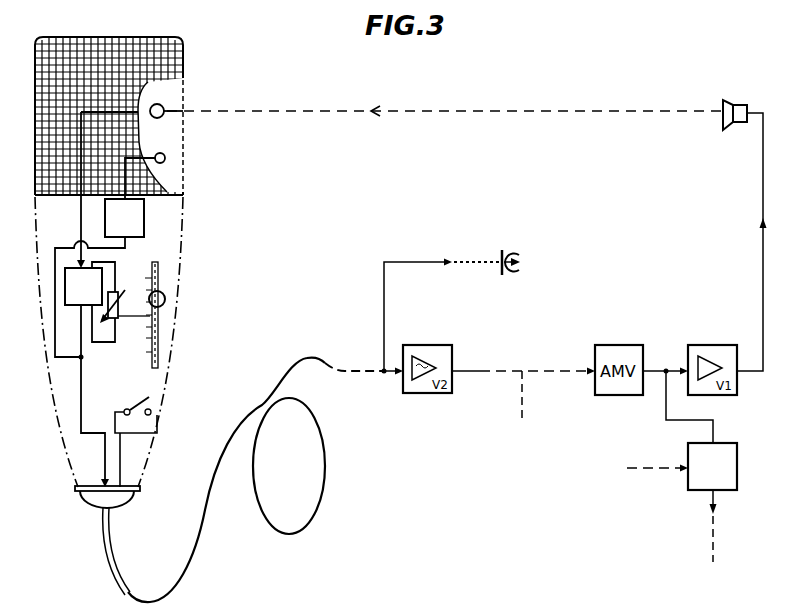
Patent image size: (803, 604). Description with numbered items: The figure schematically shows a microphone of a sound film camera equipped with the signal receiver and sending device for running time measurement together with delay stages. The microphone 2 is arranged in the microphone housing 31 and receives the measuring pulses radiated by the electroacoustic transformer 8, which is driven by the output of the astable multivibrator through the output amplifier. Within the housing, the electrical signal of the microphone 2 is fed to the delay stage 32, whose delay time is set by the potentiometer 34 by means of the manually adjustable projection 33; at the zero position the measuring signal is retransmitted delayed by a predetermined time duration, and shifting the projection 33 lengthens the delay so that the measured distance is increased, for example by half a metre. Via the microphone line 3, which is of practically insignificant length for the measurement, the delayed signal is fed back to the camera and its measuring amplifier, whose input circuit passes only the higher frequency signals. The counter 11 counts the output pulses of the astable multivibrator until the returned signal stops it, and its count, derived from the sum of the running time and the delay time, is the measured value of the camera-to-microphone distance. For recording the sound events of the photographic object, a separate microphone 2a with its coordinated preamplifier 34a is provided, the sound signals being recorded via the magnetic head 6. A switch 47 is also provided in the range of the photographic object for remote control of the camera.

The microphone 2 is at (164, 105).
The separate microphone 2a is at (166, 153).
The microphone line 3 is at (325, 457).
The magnetic head 6 is at (511, 253).
The electroacoustic transformer 8 is at (741, 105).
The counter 11 is at (727, 467).
The microphone housing 31 is at (182, 249).
The delay stage 32 is at (76, 285).
The manually adjustable projection 33 is at (165, 296).
The potentiometer 34 is at (128, 317).
The preamplifier 34a is at (140, 215).
The switch 47 is at (152, 407).